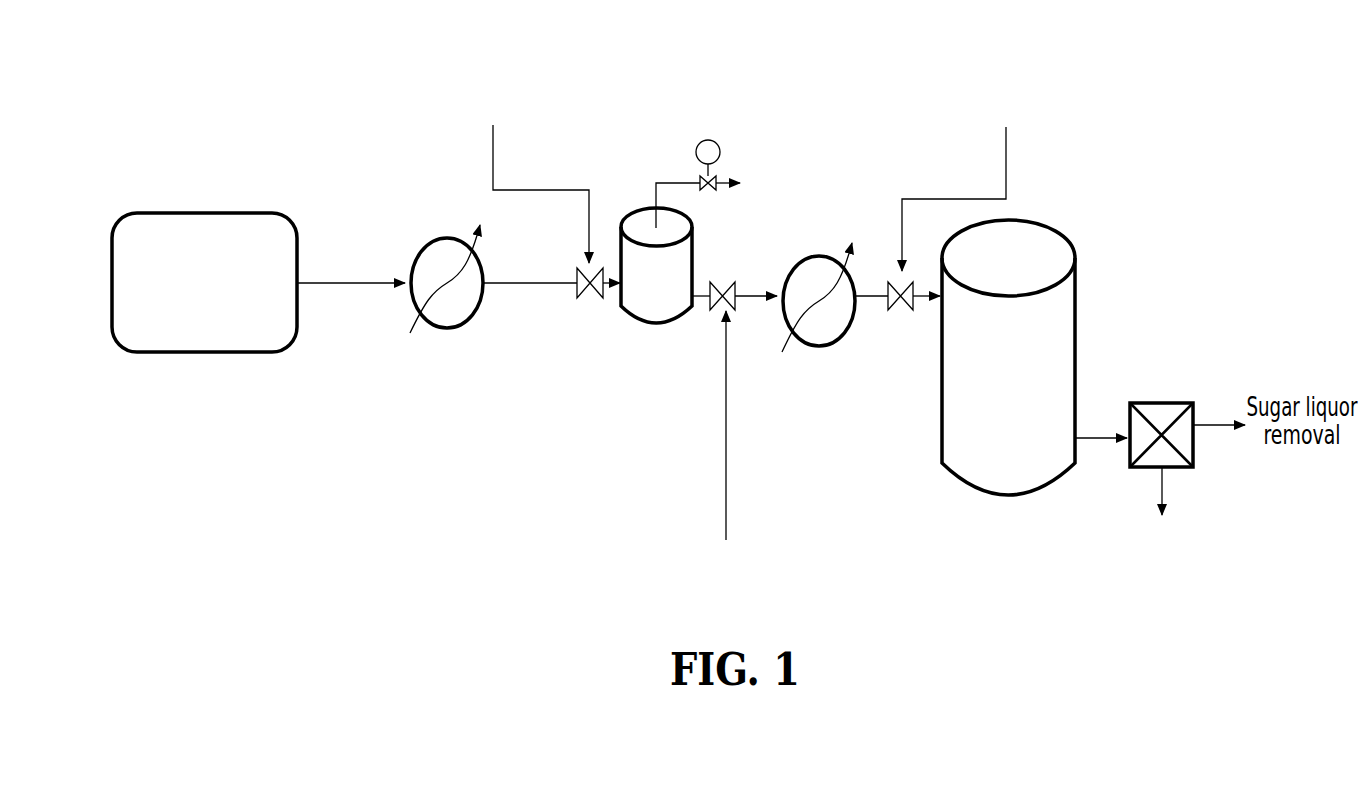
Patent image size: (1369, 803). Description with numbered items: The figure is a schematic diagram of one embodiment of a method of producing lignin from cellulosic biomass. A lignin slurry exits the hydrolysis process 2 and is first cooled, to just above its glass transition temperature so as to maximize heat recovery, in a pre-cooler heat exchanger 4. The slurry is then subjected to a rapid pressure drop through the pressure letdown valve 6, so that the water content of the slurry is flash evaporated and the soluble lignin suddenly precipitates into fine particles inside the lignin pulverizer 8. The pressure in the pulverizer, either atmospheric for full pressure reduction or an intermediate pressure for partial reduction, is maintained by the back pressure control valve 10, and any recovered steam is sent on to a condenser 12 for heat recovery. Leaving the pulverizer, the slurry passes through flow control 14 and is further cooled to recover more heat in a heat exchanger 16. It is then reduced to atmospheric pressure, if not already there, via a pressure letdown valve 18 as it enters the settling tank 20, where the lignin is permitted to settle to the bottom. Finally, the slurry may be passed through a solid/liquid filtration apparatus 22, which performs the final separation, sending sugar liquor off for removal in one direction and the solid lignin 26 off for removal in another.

The hydrolysis process 2 is at (210, 232).
The pre-cooler heat exchanger 4 is at (440, 330).
The pressure letdown valve 6 is at (487, 178).
The lignin pulverizer 8 is at (653, 318).
The back pressure control valve 10 is at (697, 135).
The condenser 12 is at (792, 168).
The flow control 14 is at (728, 457).
The heat exchanger 16 is at (820, 363).
The pressure letdown valve 18 is at (975, 164).
The settling tank 20 is at (1008, 392).
The solid/liquid filtration apparatus 22 is at (1165, 413).
The lignin 26 is at (1168, 543).